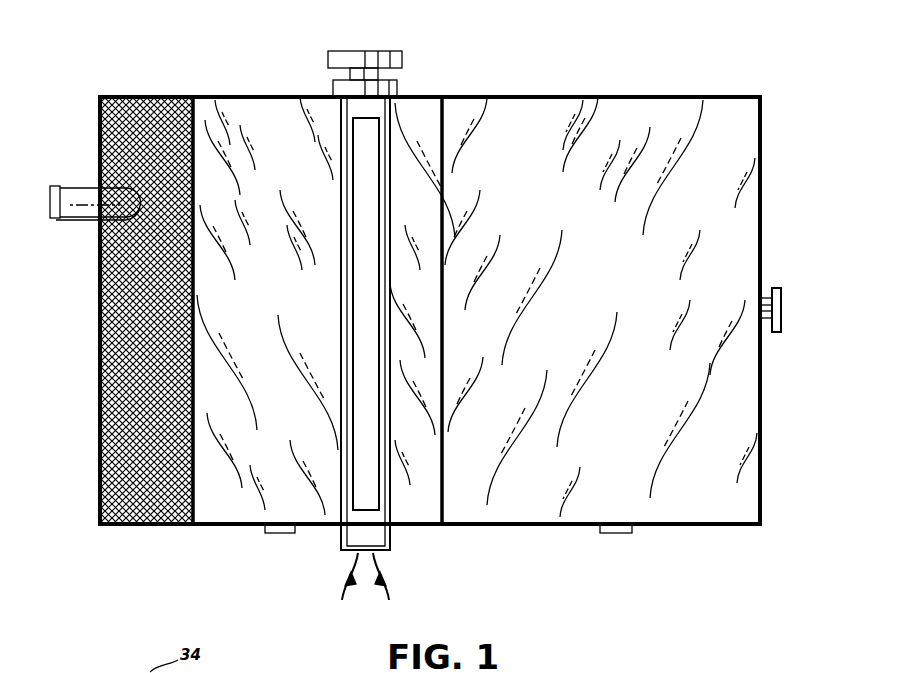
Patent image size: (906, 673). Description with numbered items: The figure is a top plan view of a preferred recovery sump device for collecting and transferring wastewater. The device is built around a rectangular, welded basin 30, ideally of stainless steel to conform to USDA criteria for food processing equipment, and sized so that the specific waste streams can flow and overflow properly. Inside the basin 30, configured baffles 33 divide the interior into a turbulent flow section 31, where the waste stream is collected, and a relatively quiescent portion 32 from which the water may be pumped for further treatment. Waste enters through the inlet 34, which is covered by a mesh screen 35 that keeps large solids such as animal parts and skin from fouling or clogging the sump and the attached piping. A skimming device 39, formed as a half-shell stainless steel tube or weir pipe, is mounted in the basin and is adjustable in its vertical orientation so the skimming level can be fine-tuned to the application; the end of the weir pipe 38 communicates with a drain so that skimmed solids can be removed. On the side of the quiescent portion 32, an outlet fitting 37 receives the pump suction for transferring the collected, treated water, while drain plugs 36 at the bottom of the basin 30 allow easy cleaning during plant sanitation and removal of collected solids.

The basin 30 is at (599, 96).
The turbulent flow section 31 is at (259, 306).
The quiescent portion 32 is at (581, 304).
The baffles 33 is at (451, 183).
The inlet 34 is at (87, 190).
The mesh screen 35 is at (168, 110).
The drain plugs 36 is at (281, 548).
The outlet fitting 37 is at (793, 298).
The end of the weir pipe 38 is at (397, 564).
The skimming device 39 is at (330, 184).